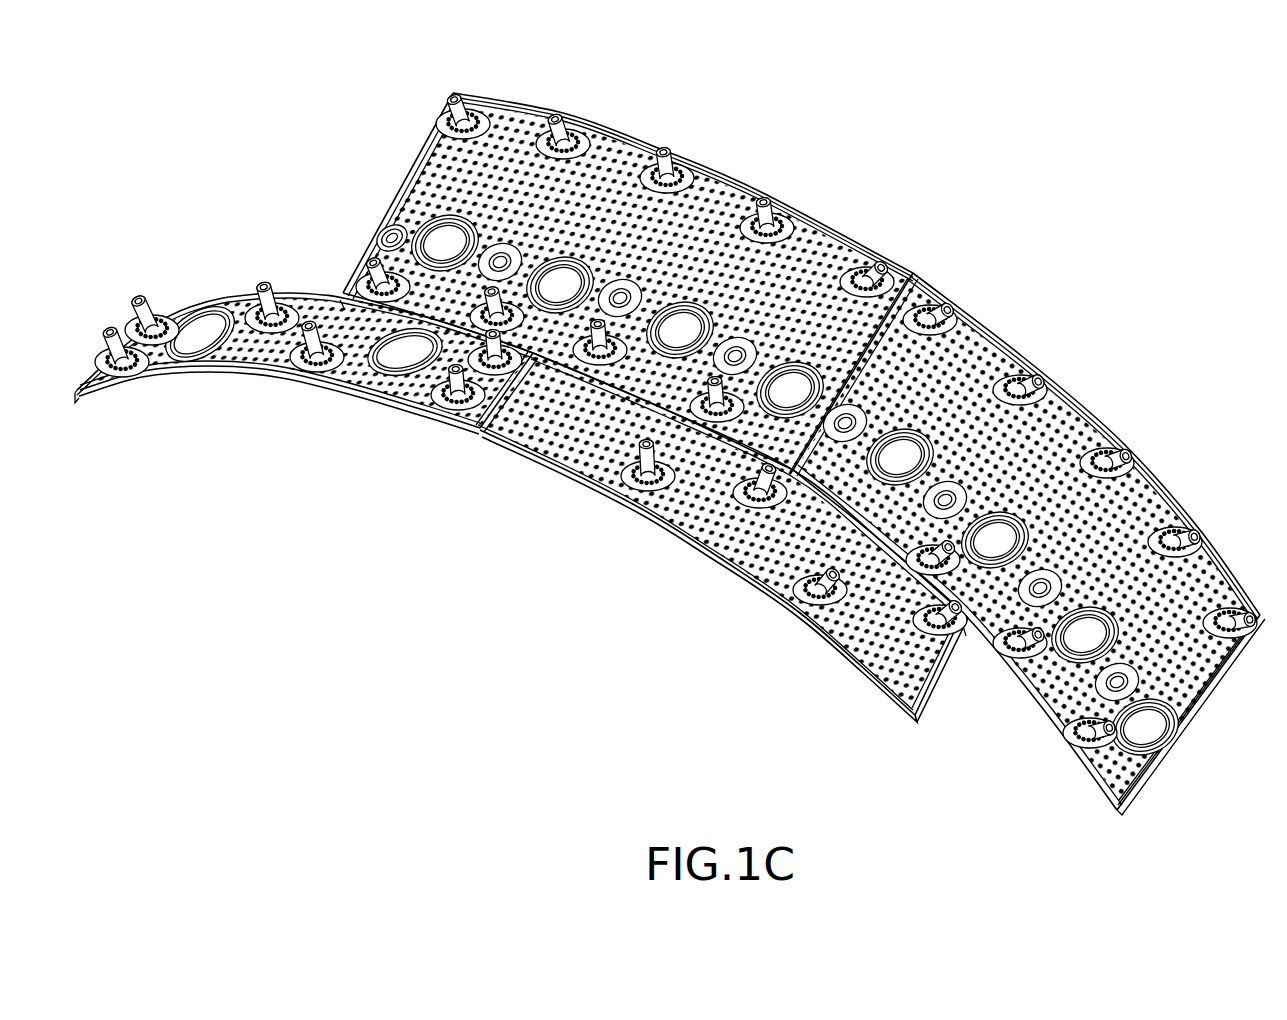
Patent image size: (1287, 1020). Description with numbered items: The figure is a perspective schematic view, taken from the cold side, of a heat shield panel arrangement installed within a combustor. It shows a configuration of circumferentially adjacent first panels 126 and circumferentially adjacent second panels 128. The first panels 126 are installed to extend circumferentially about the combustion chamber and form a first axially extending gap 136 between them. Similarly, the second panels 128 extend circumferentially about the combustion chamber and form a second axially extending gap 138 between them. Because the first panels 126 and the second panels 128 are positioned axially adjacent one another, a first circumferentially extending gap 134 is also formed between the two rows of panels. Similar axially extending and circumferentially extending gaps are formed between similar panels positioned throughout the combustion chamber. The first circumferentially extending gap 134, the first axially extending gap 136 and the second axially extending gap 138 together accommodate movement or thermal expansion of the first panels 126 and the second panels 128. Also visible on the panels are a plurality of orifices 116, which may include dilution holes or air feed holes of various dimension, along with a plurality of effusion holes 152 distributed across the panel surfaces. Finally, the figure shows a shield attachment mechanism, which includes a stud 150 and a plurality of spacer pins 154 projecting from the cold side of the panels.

The orifices 116 is at (1077, 642).
The first panels 126 is at (238, 381).
The second panels 128 is at (700, 163).
The first circumferentially extending gap 134 is at (337, 291).
The first axially extending gap 136 is at (487, 436).
The second axially extending gap 138 is at (918, 272).
The stud 150 is at (897, 650).
The effusion holes 152 is at (897, 701).
The spacer pins 154 is at (837, 605).